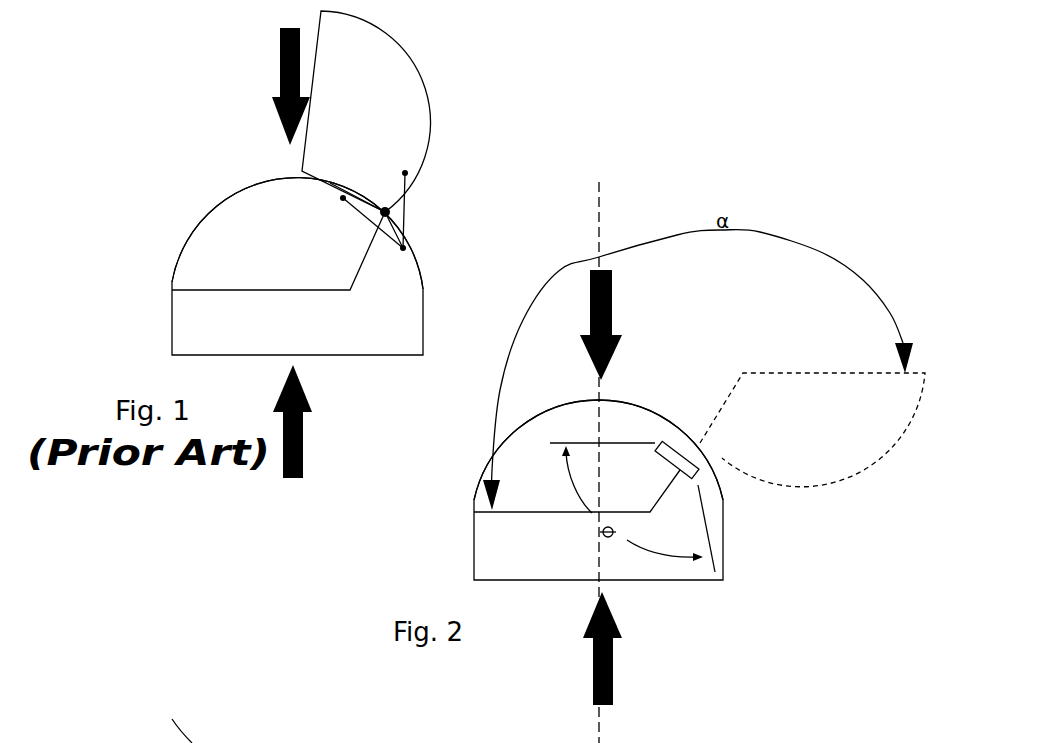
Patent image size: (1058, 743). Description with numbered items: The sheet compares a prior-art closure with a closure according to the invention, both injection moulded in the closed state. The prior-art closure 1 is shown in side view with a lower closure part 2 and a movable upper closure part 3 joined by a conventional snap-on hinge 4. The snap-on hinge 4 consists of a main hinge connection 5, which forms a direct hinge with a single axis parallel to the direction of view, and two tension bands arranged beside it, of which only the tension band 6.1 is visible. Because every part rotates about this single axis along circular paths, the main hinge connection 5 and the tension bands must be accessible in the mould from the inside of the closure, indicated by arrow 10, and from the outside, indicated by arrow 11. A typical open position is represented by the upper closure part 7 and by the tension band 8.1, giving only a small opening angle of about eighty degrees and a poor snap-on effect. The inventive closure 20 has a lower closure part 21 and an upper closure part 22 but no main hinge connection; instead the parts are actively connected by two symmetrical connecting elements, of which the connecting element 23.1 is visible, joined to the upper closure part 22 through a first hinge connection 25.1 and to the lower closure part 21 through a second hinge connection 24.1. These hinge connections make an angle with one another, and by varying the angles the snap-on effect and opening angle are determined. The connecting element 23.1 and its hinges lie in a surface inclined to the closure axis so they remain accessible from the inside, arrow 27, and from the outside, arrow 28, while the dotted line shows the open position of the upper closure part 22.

In FIG. 1, the injection moulded closure 1 is at (180, 78).
In FIG. 1, the lower closure part 2 is at (311, 338).
In FIG. 1, the upper closure part 3 is at (301, 233).
In FIG. 1, the snap-on hinge 4 is at (442, 213).
In FIG. 1, the main hinge connection 5 is at (385, 212).
In FIG. 1, the tension band 6.1 is at (378, 229).
In FIG. 1, the upper closure part in open position 7 is at (375, 116).
In FIG. 1, the tension band in open position 8.1 is at (407, 216).
In FIG. 1, the arrow from inside of closure 10 is at (299, 421).
In FIG. 1, the arrow from outside of closure 11 is at (284, 86).
In FIG. 2, the injection moulded closure 20 is at (744, 320).
In FIG. 2, the lower closure part 21 is at (541, 558).
In FIG. 2, the upper closure part 22 is at (533, 485).
In FIG. 2, the connecting element 23.1 is at (673, 460).
In FIG. 2, the second hinge connection 24.1 is at (687, 479).
In FIG. 2, the first hinge connection 25.1 is at (660, 442).
In FIG. 2, the arrow from inside of closure 27 is at (613, 648).
In FIG. 2, the arrow from outside of closure 28 is at (608, 325).